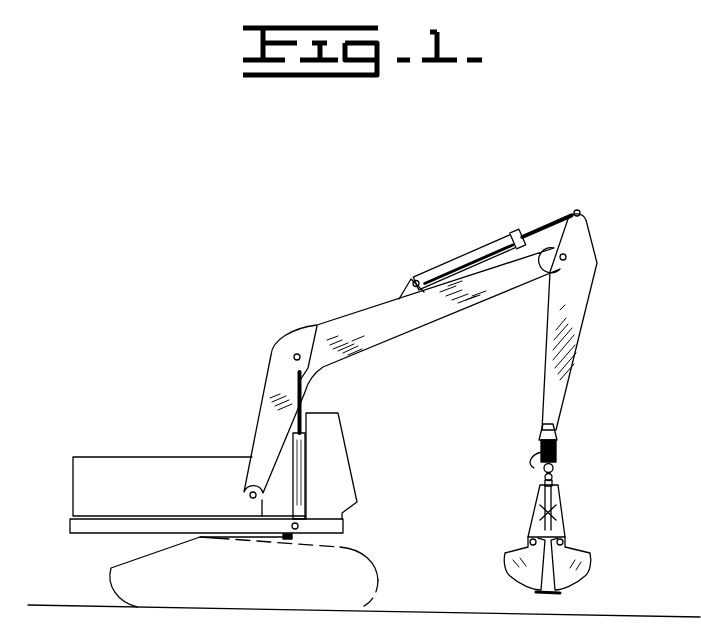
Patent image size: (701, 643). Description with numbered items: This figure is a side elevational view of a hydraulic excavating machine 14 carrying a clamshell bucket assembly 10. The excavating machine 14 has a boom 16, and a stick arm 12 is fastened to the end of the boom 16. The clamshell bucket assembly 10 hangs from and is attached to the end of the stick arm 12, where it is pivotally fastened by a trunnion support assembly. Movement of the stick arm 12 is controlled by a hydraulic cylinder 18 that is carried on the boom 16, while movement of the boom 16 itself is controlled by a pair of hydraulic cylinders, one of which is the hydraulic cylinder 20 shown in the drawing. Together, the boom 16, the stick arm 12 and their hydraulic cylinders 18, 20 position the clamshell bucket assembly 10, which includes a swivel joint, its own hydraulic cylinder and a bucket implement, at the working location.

The clamshell bucket assembly 10 is at (564, 473).
The stick arm 12 is at (566, 371).
The excavating machine 14 is at (156, 438).
The boom 16 is at (390, 337).
The hydraulic cylinder 18 is at (445, 268).
The hydraulic cylinder 20 is at (305, 477).